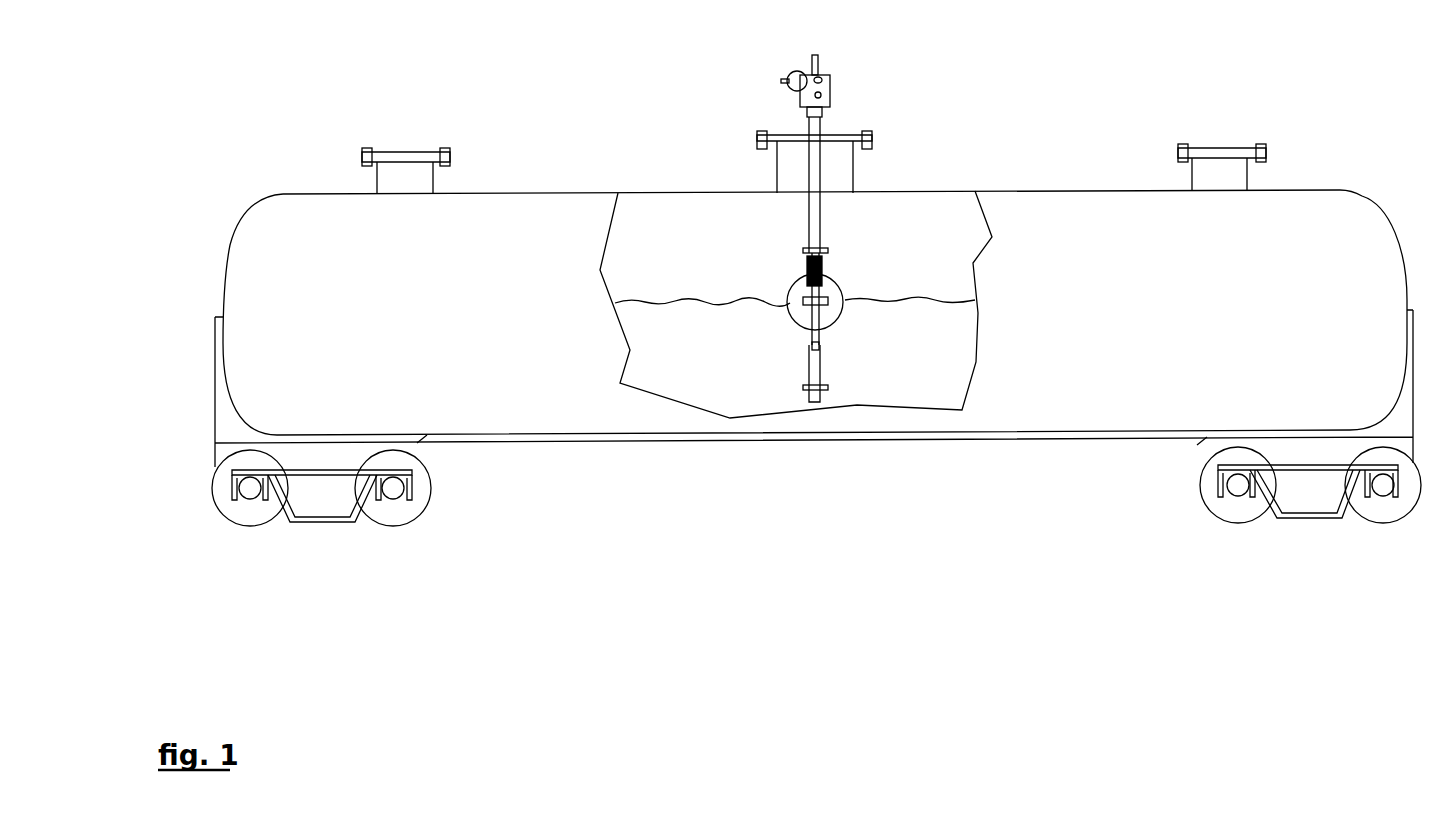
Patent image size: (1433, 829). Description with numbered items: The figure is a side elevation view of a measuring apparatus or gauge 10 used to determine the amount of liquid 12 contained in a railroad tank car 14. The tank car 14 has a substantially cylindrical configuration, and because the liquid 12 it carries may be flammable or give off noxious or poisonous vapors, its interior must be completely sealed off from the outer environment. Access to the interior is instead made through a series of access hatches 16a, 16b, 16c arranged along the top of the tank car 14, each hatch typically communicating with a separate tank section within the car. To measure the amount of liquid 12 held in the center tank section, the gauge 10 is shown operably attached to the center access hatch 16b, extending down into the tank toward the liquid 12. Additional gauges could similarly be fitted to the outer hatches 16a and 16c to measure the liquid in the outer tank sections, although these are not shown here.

The gauge 10 is at (825, 228).
The liquid 12 is at (708, 377).
The railroad tank car 14 is at (245, 217).
The access hatch 16a is at (373, 183).
The access hatch 16b is at (855, 183).
The access hatch 16c is at (1250, 177).